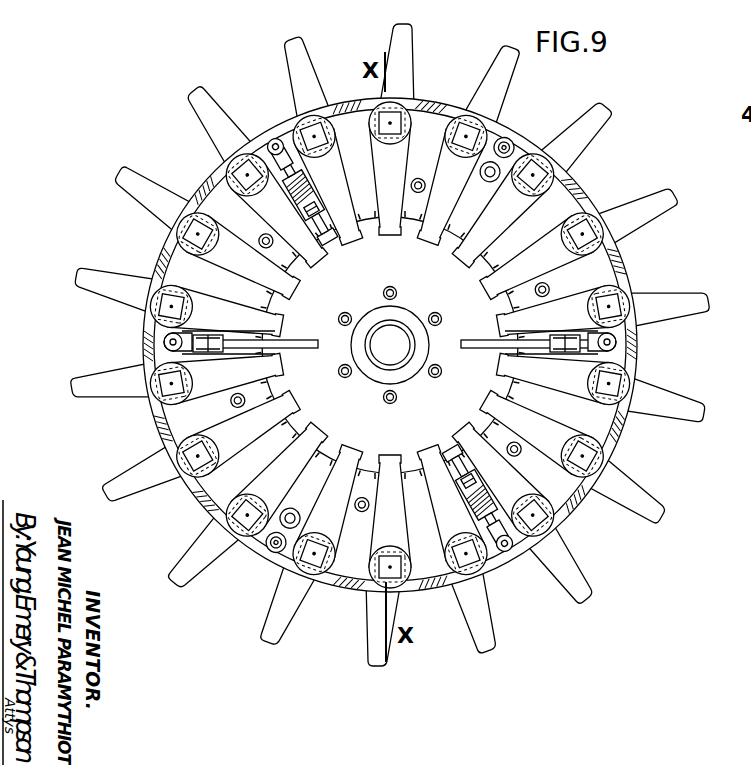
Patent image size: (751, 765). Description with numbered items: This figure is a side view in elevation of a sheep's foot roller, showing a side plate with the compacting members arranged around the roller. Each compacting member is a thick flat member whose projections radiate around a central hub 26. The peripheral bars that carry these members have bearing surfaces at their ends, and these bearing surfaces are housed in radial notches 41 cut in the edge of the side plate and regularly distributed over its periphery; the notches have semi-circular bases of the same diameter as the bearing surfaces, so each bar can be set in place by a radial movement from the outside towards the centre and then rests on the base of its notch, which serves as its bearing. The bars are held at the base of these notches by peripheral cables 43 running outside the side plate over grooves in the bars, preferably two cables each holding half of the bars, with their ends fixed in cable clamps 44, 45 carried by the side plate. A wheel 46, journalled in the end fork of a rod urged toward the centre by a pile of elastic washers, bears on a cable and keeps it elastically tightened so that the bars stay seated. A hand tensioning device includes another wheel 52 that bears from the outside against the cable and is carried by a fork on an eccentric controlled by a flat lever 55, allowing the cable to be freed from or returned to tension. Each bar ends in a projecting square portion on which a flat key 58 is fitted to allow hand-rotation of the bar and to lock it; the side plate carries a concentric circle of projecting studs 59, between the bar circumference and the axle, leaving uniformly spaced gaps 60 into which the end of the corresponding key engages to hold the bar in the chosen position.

The central hub 26 is at (582, 150).
The radial notches 41 is at (600, 213).
The peripheral cables 43 is at (623, 253).
The cable clamp 44 is at (506, 146).
The cable clamp 45 is at (485, 174).
The wheel 46 is at (272, 143).
The wheel 52 is at (164, 343).
The flat lever 55 is at (297, 345).
The flat key 58 is at (637, 440).
The projecting studs 59 is at (500, 380).
The gaps 60 is at (386, 357).